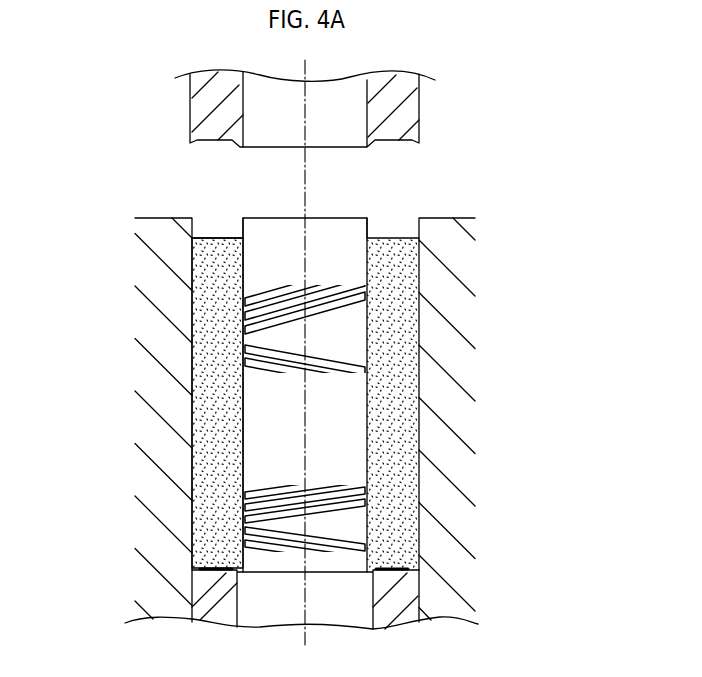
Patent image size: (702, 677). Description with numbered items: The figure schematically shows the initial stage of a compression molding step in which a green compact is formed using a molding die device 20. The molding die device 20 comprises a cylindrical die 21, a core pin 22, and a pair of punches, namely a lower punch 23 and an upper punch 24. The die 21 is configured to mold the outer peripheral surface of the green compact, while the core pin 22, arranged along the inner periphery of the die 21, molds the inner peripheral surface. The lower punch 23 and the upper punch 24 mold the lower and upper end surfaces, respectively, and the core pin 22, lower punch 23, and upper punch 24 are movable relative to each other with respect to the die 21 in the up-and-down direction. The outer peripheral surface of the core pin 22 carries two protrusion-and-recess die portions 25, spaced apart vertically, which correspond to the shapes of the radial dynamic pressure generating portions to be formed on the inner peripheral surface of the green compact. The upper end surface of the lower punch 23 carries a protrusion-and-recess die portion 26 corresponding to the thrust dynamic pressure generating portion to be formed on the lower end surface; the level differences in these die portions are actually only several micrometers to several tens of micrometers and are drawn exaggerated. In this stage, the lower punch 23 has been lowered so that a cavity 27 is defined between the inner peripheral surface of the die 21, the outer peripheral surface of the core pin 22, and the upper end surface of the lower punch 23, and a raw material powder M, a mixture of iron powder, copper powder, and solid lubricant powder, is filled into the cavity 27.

The molding die device 20 is at (514, 175).
The die 21 is at (466, 417).
The core pin 22 is at (286, 243).
The lower punch 23 is at (208, 607).
The upper punch 24 is at (203, 108).
The protrusion-and-recess die portion 25 is at (373, 326).
The protrusion-and-recess die portion 26 is at (210, 560).
The cavity 27 is at (205, 414).
The raw material powder M is at (215, 327).